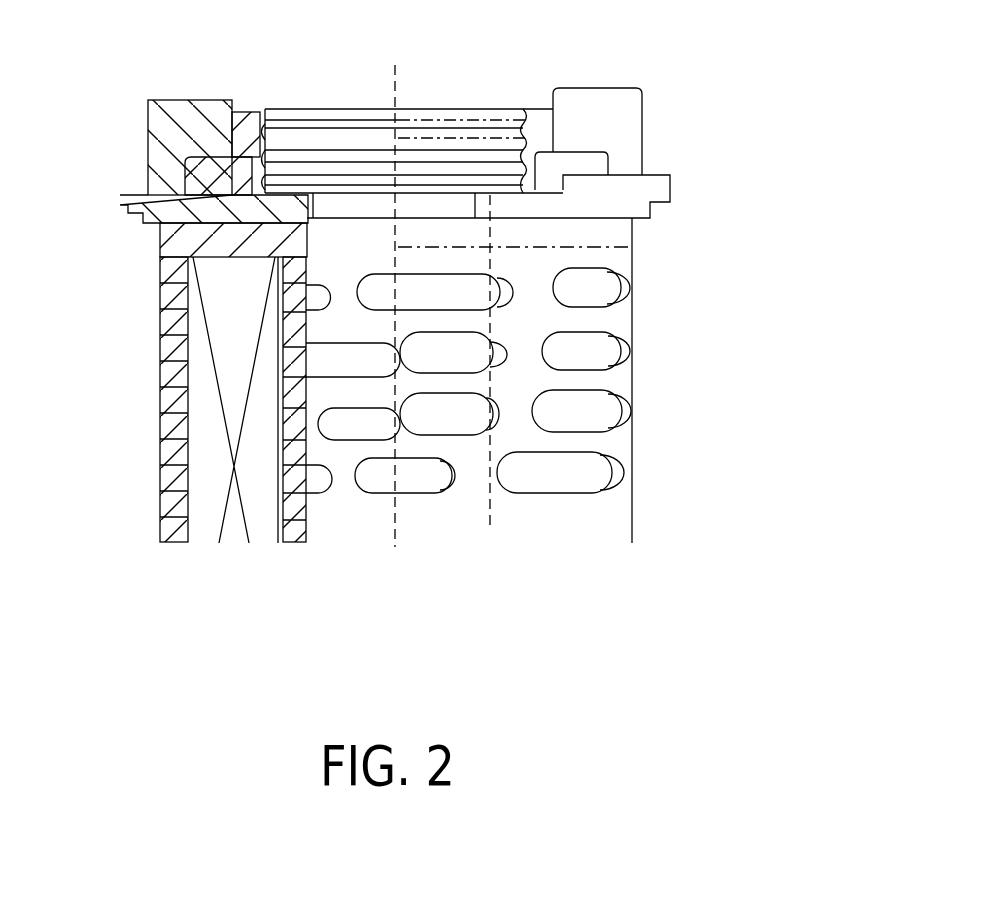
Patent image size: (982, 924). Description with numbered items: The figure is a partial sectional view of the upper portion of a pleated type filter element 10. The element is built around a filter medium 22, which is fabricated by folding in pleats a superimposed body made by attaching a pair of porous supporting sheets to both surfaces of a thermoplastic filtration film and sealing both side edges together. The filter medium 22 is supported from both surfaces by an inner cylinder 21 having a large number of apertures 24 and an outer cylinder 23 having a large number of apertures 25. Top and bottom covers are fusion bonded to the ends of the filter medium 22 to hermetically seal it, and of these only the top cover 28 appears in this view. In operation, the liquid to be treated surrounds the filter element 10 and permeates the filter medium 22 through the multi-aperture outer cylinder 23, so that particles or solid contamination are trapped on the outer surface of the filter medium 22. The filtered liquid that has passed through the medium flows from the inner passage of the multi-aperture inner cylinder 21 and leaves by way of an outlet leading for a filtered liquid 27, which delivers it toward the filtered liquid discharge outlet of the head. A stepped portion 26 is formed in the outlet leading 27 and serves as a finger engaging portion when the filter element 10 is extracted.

The pleated type filter element 10 is at (704, 318).
The inner cylinder 21 is at (292, 552).
The filter medium 22 is at (233, 553).
The outer cylinder 23 is at (173, 552).
The apertures 24 is at (372, 493).
The apertures 25 is at (166, 370).
The stepped portion 26 is at (313, 218).
The outlet leading for a filtered liquid 27 is at (275, 148).
The top cover 28 is at (160, 240).